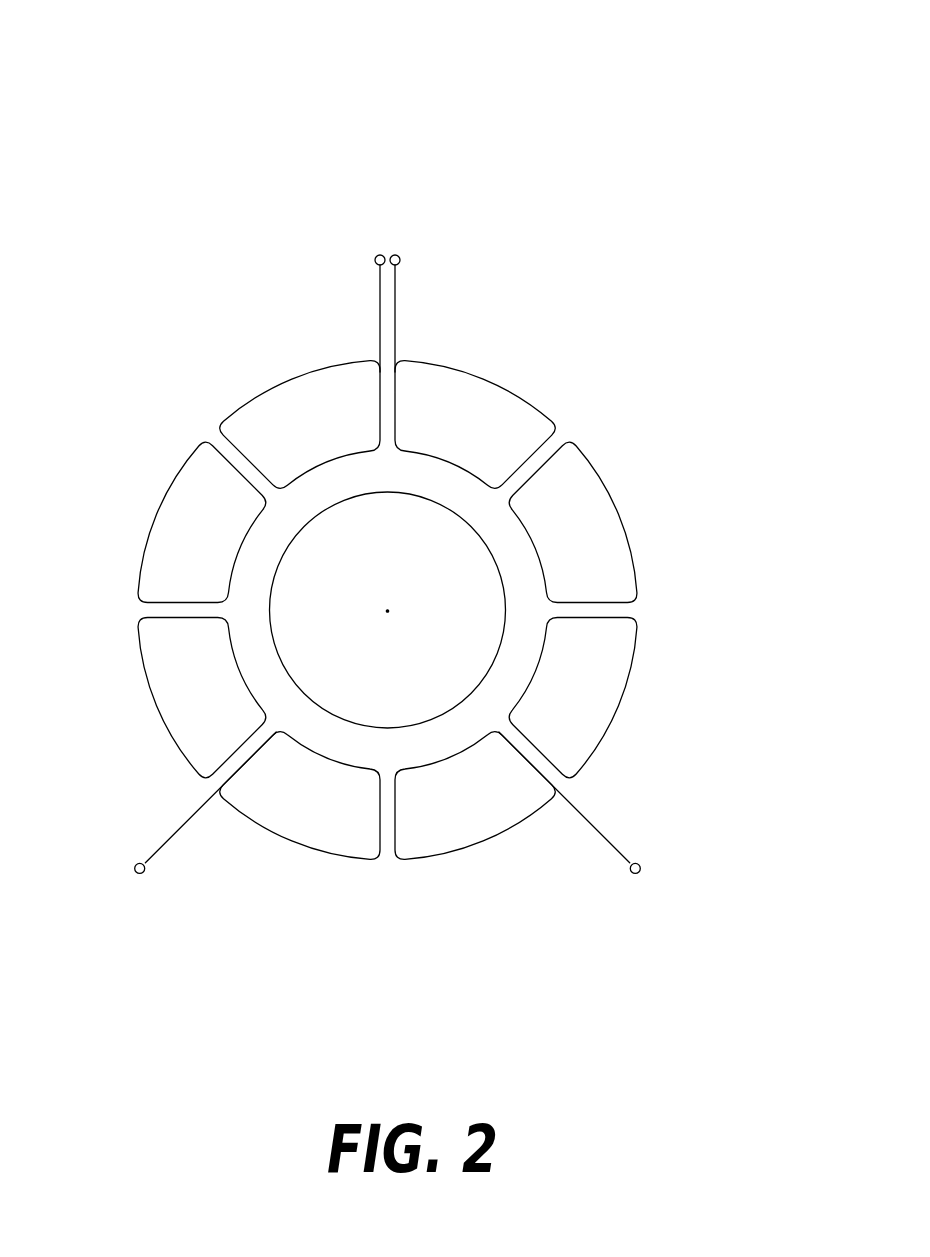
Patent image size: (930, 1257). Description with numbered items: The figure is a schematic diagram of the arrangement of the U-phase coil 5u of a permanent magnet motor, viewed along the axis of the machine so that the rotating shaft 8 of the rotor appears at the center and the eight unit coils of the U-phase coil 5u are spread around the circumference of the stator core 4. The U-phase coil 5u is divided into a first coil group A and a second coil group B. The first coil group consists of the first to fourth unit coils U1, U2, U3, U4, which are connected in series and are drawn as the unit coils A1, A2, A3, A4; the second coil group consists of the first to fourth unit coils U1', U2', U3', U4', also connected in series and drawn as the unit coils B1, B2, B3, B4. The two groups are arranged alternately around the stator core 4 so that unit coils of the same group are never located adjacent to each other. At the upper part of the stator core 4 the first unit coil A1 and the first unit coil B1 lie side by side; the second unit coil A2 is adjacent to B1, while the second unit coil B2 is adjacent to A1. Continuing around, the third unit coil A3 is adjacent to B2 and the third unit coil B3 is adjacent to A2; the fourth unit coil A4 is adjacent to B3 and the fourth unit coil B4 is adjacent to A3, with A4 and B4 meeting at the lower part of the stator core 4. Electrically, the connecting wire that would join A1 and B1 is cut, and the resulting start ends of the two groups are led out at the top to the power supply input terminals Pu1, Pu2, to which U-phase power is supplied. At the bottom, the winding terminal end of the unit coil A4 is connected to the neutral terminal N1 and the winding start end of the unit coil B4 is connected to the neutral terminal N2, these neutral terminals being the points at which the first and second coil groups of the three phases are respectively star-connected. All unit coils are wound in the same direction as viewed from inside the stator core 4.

The U-phase coil 5u is at (524, 176).
The rotating shaft 8 is at (478, 628).
The stator core 4 is at (236, 460).
The power supply input terminal Pu1 is at (379, 254).
The power supply input terminal Pu2 is at (401, 254).
The neutral terminal N1 is at (641, 872).
The neutral terminal N2 is at (134, 868).
The first unit coil U1 is at (300, 405).
The first unit coil U1' is at (475, 404).
The second unit coil U2 is at (597, 522).
The second unit coil U2' is at (160, 522).
The third unit coil U3 is at (169, 698).
The third unit coil U3' is at (617, 698).
The fourth unit coil U4 is at (475, 828).
The fourth unit coil U4' is at (300, 817).
The first unit coil of the first coil group A1 is at (272, 350).
The first unit coil of the second coil group B1 is at (512, 350).
The second unit coil of the first coil group A2 is at (654, 494).
The second unit coil of the second coil group B2 is at (202, 522).
The third unit coil of the first coil group A3 is at (202, 698).
The third unit coil of the second coil group B3 is at (573, 698).
The fourth unit coil of the first coil group A4 is at (475, 796).
The fourth unit coil of the second coil group B4 is at (266, 872).